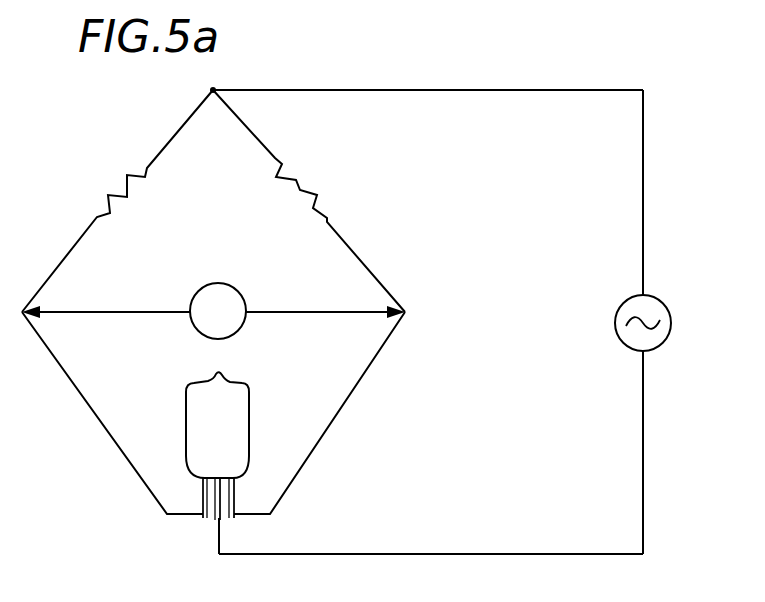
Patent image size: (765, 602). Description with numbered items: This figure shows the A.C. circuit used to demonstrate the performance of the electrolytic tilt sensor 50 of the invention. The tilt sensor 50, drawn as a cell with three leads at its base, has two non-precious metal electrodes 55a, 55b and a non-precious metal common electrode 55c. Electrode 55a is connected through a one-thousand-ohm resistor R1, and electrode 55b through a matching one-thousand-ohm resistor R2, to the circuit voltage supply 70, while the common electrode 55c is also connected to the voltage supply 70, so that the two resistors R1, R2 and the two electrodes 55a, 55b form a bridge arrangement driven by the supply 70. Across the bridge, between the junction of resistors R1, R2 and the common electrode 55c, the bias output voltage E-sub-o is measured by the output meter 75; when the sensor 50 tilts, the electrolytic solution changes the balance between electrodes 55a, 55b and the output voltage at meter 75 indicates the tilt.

The tilt sensor 50 is at (249, 437).
The non-precious metal electrode 55a is at (203, 518).
The non-precious metal electrode 55b is at (235, 518).
The non-precious metal common electrode 55c is at (219, 521).
The circuit voltage supply 70 is at (678, 343).
The bias output voltage meter 75 is at (188, 329).
The resistor R1 is at (118, 186).
The resistor R2 is at (313, 188).